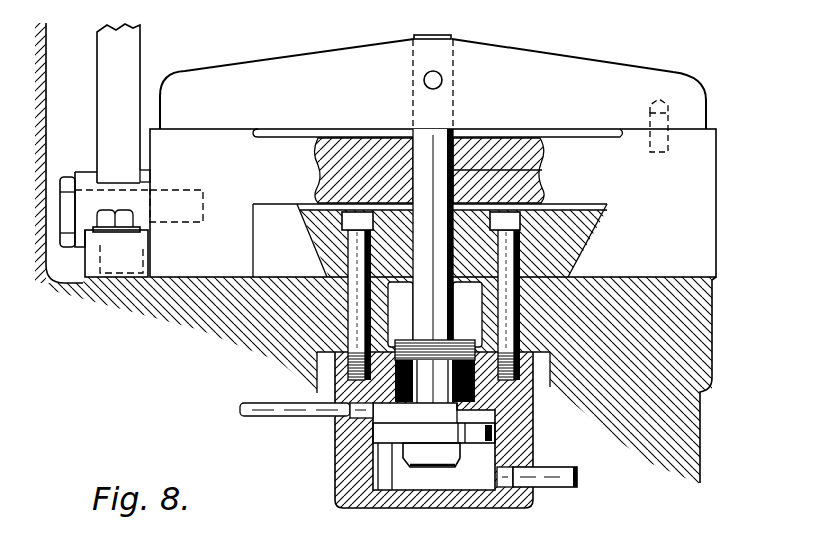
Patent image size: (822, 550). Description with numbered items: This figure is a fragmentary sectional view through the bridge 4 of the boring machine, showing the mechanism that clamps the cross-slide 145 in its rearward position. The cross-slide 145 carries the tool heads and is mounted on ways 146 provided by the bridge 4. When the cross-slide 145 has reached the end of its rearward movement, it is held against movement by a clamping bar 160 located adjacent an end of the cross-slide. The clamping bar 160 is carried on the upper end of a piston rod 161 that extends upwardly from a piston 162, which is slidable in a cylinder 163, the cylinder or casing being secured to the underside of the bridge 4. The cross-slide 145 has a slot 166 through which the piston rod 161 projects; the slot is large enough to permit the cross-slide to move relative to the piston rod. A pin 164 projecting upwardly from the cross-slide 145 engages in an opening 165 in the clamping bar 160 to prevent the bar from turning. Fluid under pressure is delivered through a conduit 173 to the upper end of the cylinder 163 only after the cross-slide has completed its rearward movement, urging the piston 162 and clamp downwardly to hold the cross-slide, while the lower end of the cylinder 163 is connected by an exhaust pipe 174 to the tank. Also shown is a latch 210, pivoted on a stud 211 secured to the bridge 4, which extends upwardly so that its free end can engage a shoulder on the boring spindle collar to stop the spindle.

The bridge 4 is at (702, 330).
The cross-slide 145 is at (702, 224).
The ways 146 is at (582, 252).
The clamping bar 160 is at (573, 63).
The piston rod 161 is at (448, 36).
The piston 162 is at (533, 432).
The cylinder 163 is at (514, 500).
The pin 164 is at (668, 140).
The opening 165 is at (668, 117).
The slot 166 is at (540, 166).
The conduit 173 is at (264, 417).
The exhaust pipe 174 is at (577, 471).
The latch 210 is at (133, 44).
The stud 211 is at (66, 178).